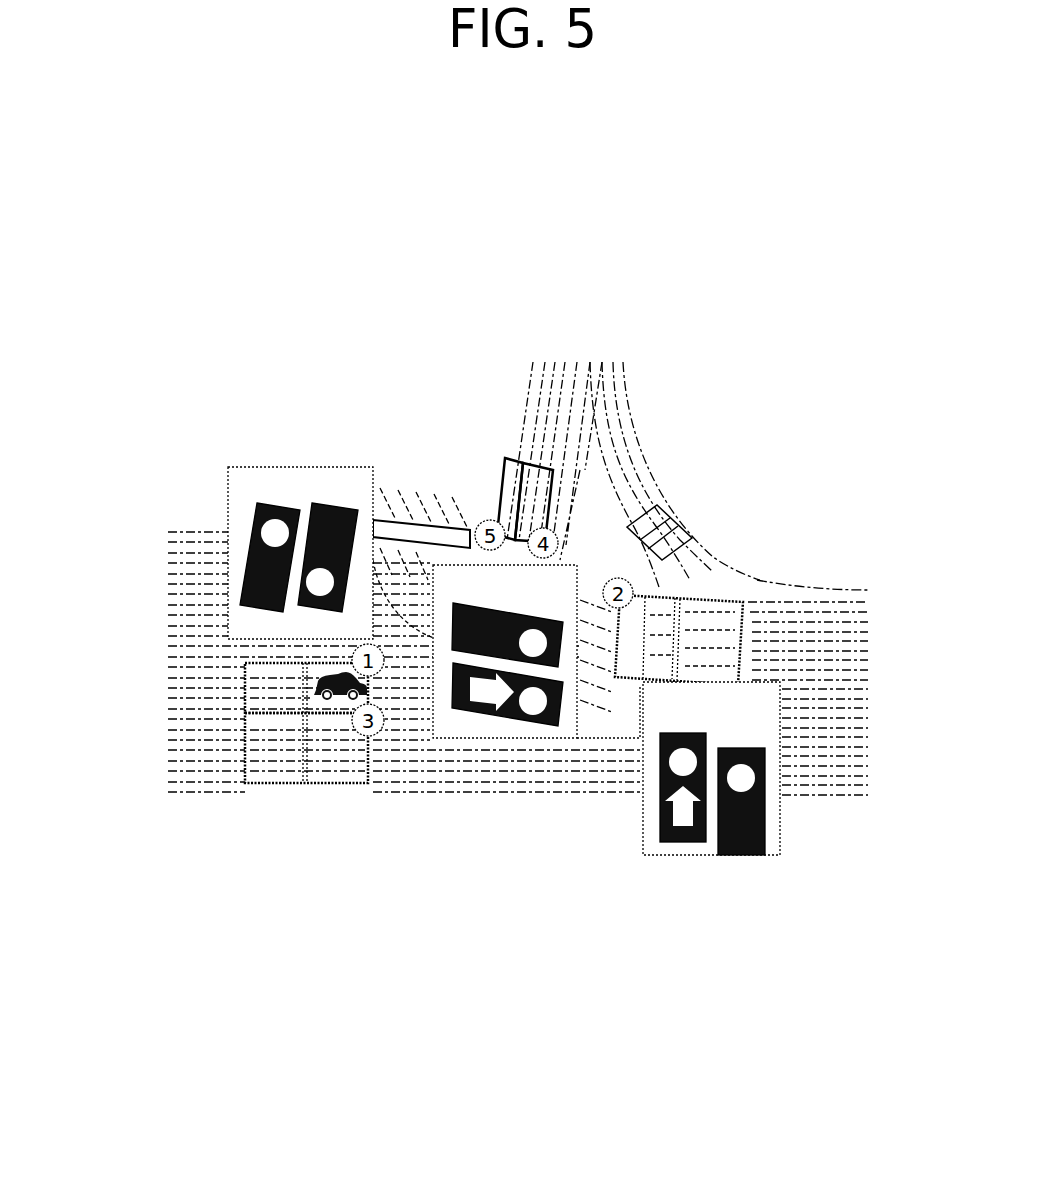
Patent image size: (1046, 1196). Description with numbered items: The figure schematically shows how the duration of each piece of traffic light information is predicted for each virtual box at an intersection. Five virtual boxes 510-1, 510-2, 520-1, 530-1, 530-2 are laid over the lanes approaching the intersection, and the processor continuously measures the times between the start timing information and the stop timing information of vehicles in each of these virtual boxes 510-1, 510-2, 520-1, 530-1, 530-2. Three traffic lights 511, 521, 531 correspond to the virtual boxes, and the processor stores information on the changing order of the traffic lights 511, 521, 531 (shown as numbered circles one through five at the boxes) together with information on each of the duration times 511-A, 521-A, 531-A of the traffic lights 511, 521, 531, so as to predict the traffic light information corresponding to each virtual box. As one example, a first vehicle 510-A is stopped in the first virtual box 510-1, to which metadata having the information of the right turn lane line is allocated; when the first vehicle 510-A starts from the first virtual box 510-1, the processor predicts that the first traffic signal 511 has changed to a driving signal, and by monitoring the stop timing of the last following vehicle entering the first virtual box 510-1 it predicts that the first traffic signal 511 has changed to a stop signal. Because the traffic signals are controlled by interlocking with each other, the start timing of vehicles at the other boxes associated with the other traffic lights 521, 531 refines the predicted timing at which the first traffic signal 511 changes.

The first traffic light 511 is at (237, 465).
The duration time of first traffic light 511-A is at (340, 467).
The virtual box 530-2 is at (515, 458).
The virtual box 530-1 is at (553, 440).
The virtual box 520-1 is at (712, 560).
The first virtual box 510-1 is at (245, 697).
The virtual box 510-2 is at (245, 763).
The first vehicle 510-A is at (335, 697).
The duration time of traffic light 531-A is at (440, 582).
The traffic light 531 is at (503, 748).
The duration time of traffic light 521-A is at (697, 703).
The traffic light 521 is at (703, 863).